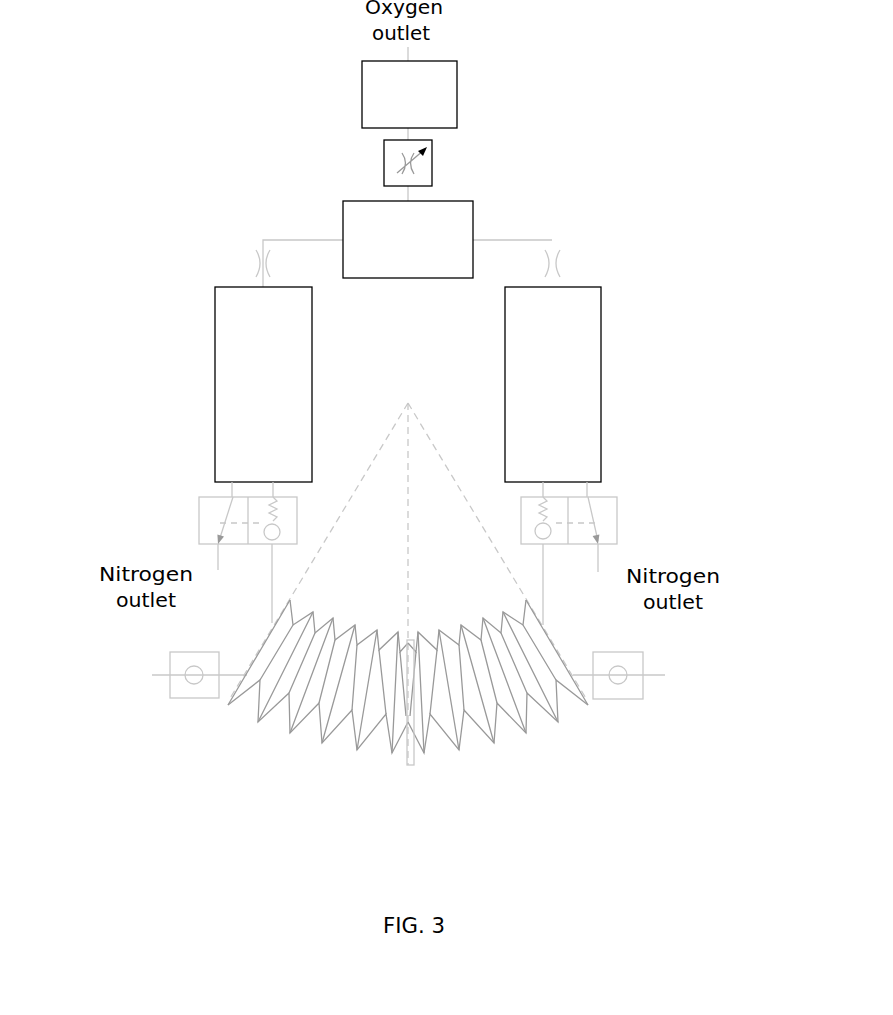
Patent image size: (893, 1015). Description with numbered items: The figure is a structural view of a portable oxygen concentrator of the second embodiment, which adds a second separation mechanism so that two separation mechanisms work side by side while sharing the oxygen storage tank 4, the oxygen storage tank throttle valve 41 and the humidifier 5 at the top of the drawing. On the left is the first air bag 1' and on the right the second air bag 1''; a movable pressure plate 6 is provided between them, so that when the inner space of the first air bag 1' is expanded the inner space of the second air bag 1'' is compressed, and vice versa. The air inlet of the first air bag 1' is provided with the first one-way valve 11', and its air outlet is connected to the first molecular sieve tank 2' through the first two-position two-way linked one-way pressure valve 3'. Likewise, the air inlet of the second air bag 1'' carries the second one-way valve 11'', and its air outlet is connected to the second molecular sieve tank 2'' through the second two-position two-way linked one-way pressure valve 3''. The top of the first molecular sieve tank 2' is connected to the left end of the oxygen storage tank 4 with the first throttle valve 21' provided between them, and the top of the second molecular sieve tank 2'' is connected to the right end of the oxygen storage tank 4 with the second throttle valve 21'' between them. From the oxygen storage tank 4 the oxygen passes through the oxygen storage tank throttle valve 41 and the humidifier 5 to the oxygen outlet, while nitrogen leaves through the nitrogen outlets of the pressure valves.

The humidifier 5 is at (362, 78).
The oxygen storage tank throttle valve 41 is at (388, 162).
The oxygen storage tank 4 is at (343, 210).
The first throttle valve 21' is at (200, 258).
The second throttle valve 21'' is at (611, 255).
The first molecular sieve tank 2' is at (215, 384).
The second molecular sieve tank 2'' is at (592, 384).
The first two-position two-way linked one-way pressure valve 3' is at (202, 552).
The second two-position two-way linked one-way pressure valve 3'' is at (612, 553).
The first one-way valve 11' is at (172, 719).
The second one-way valve 11'' is at (651, 688).
The first air bag 1' is at (305, 714).
The second air bag 1'' is at (500, 699).
The movable pressure plate 6 is at (408, 765).